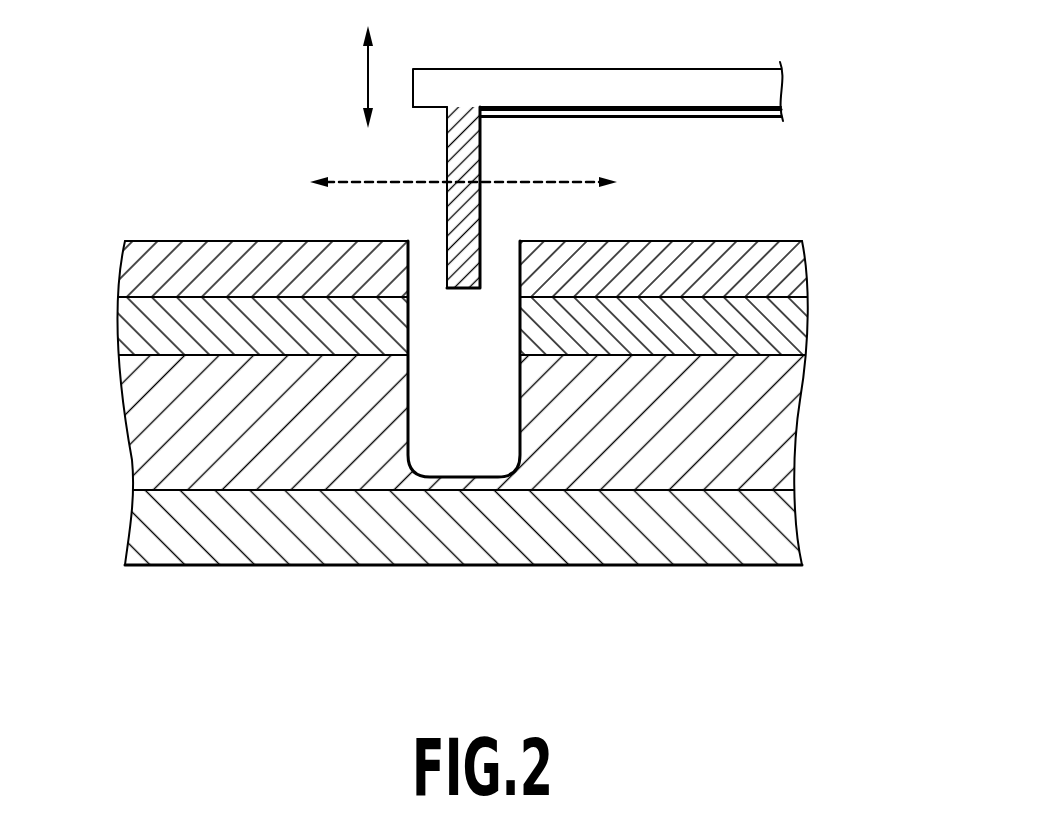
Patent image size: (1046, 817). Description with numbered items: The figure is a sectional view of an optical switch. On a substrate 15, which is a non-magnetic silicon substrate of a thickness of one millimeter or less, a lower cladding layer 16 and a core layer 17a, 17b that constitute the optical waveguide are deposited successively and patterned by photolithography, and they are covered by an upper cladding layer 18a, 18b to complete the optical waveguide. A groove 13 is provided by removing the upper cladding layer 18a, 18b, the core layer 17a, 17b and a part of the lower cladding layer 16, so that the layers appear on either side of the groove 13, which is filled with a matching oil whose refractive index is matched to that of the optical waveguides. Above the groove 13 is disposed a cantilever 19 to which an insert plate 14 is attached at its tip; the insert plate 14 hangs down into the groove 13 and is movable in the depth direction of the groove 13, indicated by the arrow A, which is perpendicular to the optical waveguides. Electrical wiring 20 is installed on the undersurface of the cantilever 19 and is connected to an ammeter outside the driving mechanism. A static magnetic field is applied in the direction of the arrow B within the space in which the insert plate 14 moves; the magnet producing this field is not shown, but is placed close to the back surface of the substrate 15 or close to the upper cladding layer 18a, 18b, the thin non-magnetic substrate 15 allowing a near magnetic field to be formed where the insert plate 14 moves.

The groove 13 is at (494, 276).
The insert plate 14 is at (447, 154).
The substrate 15 is at (785, 529).
The lower cladding layer 16 is at (785, 416).
The core layer 17a is at (124, 326).
The core layer 17b is at (795, 330).
The upper cladding layer 18a is at (124, 271).
The upper cladding layer 18b is at (795, 273).
The cantilever 19 is at (505, 78).
The electrical wiring 20 is at (693, 119).
The arrow A is at (367, 70).
The arrow B is at (563, 180).